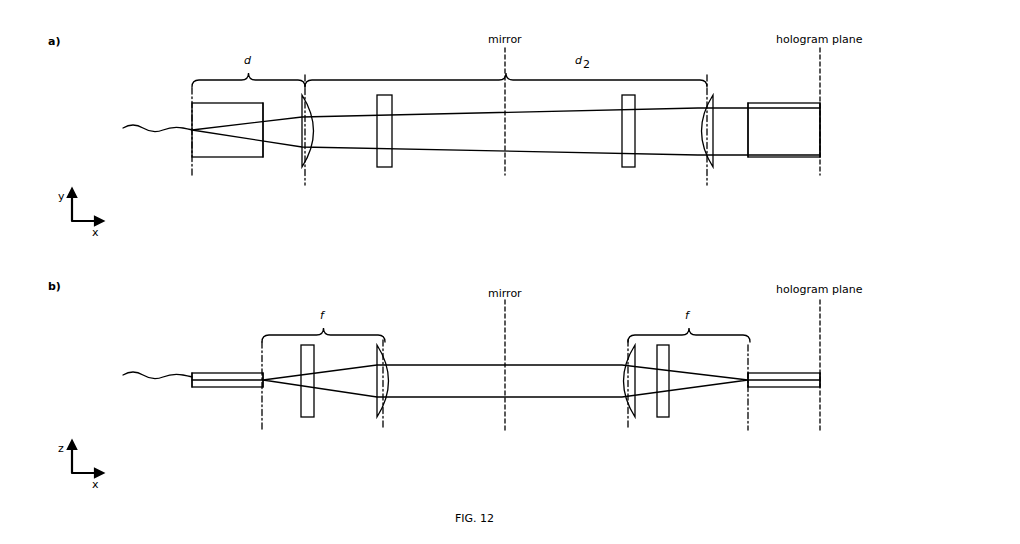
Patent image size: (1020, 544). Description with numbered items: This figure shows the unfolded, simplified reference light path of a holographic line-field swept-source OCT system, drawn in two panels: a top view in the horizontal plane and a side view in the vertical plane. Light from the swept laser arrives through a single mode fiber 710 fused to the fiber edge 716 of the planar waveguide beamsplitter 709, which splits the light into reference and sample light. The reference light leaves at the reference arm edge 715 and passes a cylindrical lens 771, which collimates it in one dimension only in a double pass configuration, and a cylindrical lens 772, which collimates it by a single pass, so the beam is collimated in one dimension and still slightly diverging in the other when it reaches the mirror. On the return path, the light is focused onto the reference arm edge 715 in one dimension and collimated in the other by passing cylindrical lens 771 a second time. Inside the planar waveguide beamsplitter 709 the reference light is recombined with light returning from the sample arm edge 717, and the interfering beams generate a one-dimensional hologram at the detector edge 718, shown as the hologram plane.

The single mode fiber 710 is at (140, 132).
The planar waveguide beamsplitter 709 is at (231, 160).
The fiber edge 716 is at (190, 157).
The sample arm edge 717 is at (263, 153).
The cylindrical lens 771 is at (305, 180).
The cylindrical lens 772 is at (385, 180).
The reference arm edge 715 is at (265, 388).
The detector edge 718 is at (822, 147).